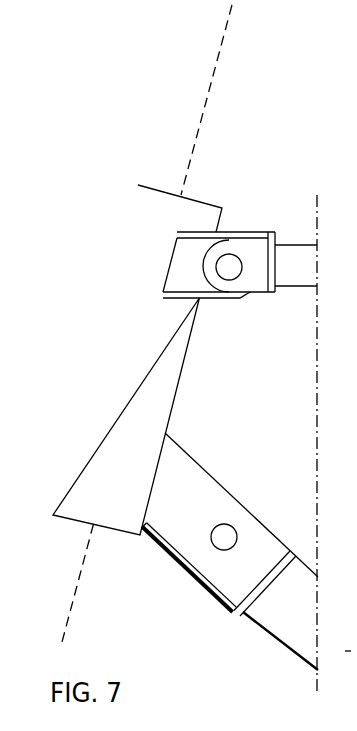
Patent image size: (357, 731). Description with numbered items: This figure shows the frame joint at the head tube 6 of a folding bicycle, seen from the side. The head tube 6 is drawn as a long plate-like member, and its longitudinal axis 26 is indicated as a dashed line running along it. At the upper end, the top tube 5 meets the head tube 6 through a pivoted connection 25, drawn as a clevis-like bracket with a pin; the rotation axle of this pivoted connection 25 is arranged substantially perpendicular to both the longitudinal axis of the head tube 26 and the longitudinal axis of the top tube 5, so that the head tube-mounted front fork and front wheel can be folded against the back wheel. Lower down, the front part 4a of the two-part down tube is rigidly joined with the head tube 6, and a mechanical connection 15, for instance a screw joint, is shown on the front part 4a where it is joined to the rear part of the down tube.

The front part of the down tube 4a is at (193, 583).
The top tube 5 is at (292, 240).
The head tube 6 is at (98, 343).
The mechanical connection 15 is at (227, 535).
The pivoted connection 25 is at (230, 232).
The longitudinal axis of the head tube 26 is at (222, 35).